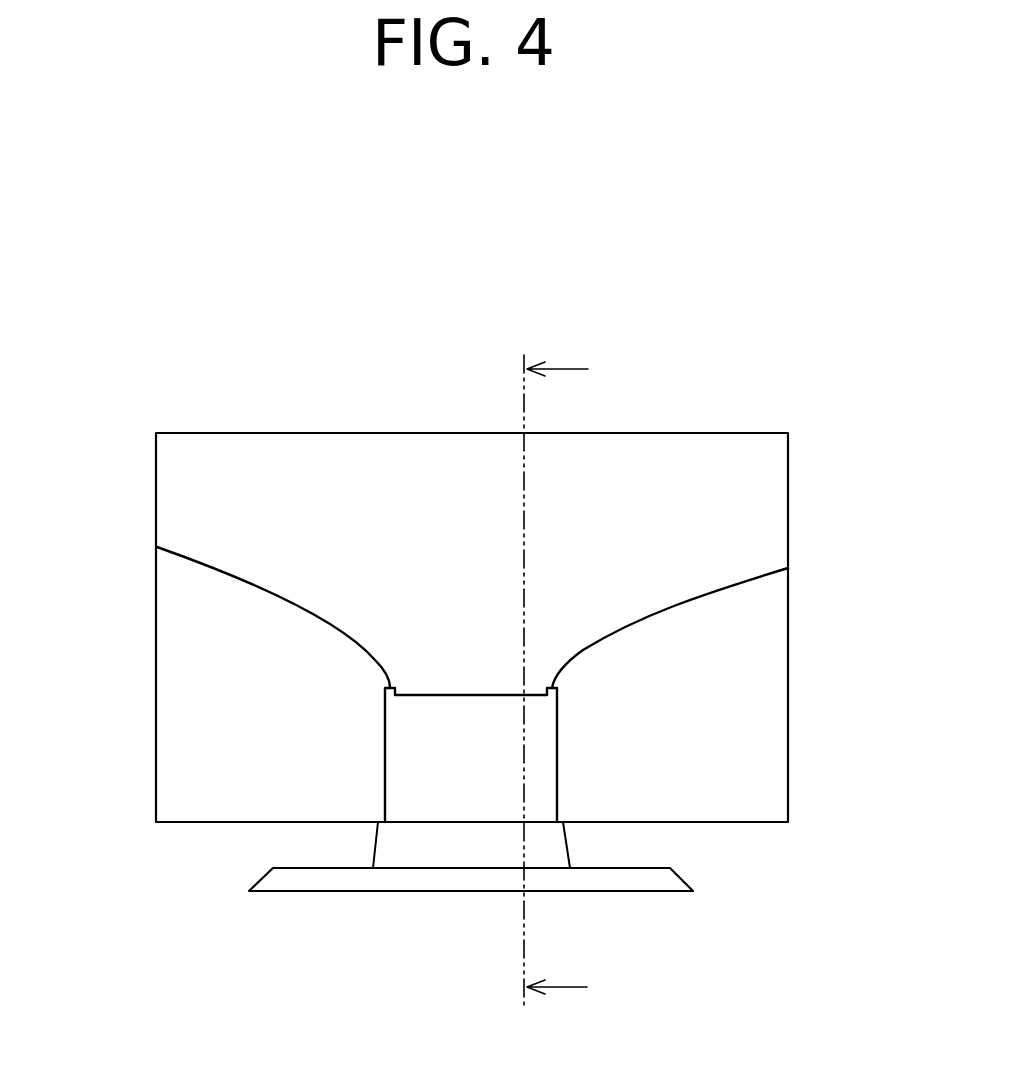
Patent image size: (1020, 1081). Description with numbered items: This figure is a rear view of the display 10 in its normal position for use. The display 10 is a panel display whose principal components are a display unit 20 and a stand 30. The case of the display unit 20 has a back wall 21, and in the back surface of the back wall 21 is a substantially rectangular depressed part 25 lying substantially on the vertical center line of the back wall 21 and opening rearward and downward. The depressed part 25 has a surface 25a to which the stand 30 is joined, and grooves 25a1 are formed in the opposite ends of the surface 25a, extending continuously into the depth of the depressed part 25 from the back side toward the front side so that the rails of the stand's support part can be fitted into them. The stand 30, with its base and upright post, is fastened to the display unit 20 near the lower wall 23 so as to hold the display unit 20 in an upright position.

The display 10 is at (806, 388).
The display unit 20 is at (678, 435).
The back wall 21 is at (324, 487).
The lower wall 23 is at (718, 822).
The depressed part 25 is at (552, 760).
The surface 25a is at (447, 697).
The grooves 25a1 is at (157, 547).
The stand 30 is at (422, 855).